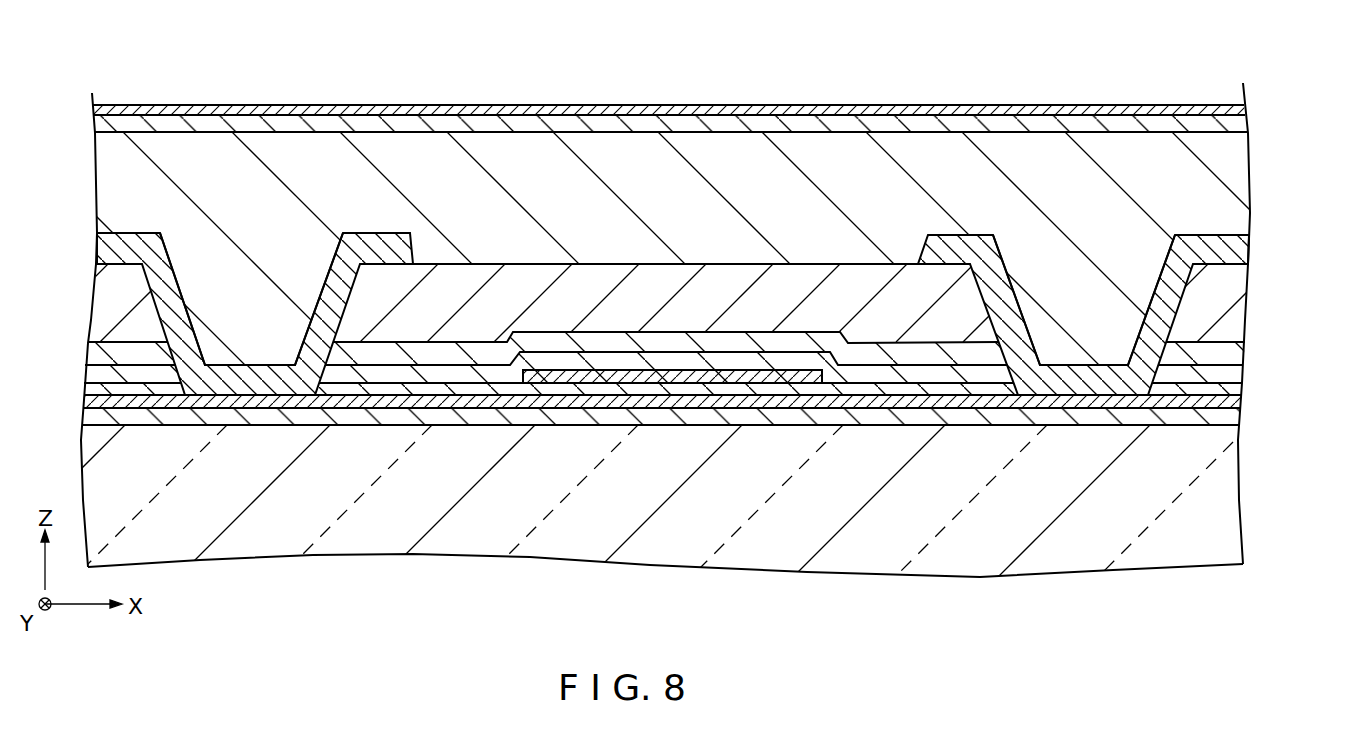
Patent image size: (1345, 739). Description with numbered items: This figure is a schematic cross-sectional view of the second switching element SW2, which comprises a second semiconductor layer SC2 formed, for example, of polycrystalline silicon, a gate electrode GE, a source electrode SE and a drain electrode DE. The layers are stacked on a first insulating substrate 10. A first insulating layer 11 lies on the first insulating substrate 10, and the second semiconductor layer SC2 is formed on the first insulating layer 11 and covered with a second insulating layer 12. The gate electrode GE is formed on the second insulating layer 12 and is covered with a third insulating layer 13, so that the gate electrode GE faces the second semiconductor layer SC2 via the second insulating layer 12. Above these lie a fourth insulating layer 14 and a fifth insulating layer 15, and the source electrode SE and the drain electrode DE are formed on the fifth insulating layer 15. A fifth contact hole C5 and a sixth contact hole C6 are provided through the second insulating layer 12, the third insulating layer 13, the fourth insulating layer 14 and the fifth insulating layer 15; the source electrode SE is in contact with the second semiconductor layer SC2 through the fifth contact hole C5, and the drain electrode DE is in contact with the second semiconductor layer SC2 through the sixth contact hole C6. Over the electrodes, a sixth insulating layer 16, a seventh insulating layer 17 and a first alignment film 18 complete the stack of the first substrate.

The first insulating substrate 10 is at (1225, 472).
The first insulating layer 11 is at (1223, 418).
The second insulating layer 12 is at (1225, 392).
The third insulating layer 13 is at (1220, 377).
The fourth insulating layer 14 is at (1218, 357).
The fifth insulating layer 15 is at (1233, 283).
The sixth insulating layer 16 is at (1228, 177).
The seventh insulating layer 17 is at (1237, 127).
The first alignment film 18 is at (174, 103).
The fifth contact hole C5 is at (313, 256).
The sixth contact hole C6 is at (1140, 256).
The source electrode SE is at (270, 366).
The drain electrode DE is at (1107, 378).
The gate electrode GE is at (607, 377).
The second semiconductor layer SC2 is at (557, 402).
The second switching element SW2 is at (657, 430).